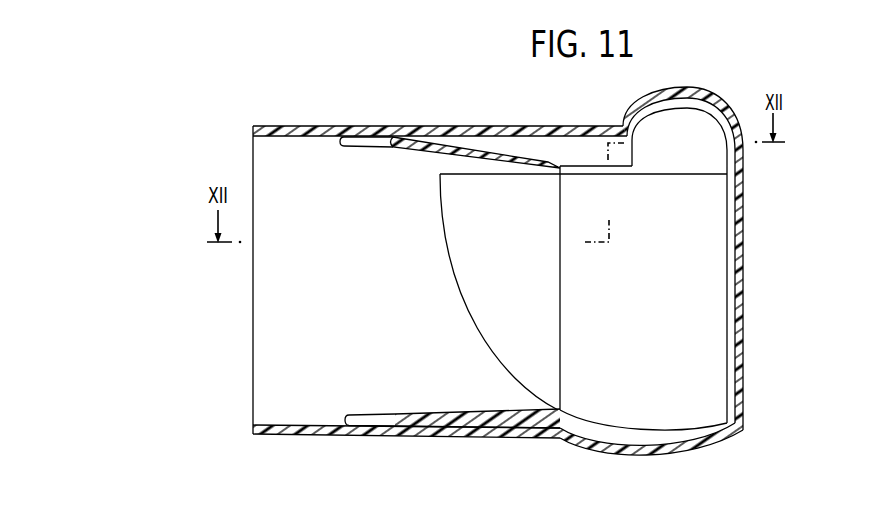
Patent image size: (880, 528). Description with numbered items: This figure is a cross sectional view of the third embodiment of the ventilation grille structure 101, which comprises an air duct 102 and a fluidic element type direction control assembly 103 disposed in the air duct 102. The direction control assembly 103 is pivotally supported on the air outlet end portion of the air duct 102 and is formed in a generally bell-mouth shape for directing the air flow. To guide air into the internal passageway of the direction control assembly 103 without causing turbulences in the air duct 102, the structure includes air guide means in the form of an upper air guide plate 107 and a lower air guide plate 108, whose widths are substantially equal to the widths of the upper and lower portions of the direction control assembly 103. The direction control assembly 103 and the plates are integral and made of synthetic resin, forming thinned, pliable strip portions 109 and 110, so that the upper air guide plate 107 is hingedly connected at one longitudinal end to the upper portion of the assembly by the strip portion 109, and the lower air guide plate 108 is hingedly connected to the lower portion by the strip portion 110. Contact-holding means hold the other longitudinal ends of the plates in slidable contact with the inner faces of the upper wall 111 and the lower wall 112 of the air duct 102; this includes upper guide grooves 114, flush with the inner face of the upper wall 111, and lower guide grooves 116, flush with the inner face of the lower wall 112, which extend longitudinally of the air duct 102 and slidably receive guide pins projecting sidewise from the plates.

The ventilation grille structure 101 is at (513, 442).
The air duct 102 is at (330, 127).
The direction control assembly 103 is at (588, 160).
The upper air guide plate 107 is at (498, 150).
The lower air guide plate 108 is at (467, 413).
The strip portion 109 is at (562, 165).
The strip portion 110 is at (553, 410).
The upper wall 111 is at (413, 126).
The lower wall 112 is at (325, 435).
The upper guide grooves 114 is at (360, 143).
The lower guide grooves 116 is at (357, 417).